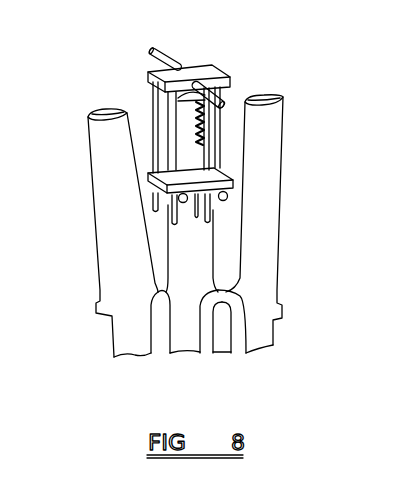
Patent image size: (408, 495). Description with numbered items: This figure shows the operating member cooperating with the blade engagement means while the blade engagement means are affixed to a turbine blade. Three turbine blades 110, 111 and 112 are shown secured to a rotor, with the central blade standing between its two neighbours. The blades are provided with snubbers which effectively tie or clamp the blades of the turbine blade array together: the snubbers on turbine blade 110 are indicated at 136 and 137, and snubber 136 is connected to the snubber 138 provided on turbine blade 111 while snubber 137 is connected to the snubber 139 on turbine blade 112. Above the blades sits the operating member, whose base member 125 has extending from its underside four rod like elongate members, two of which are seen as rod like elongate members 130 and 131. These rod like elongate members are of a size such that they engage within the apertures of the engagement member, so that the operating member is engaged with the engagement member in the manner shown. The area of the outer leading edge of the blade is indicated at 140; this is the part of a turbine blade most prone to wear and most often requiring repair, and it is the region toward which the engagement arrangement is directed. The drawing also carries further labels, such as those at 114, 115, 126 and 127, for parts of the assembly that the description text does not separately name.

The turbine blade 110 is at (186, 143).
The turbine blade 111 is at (109, 175).
The turbine blade 112 is at (278, 96).
The lower plate 114 is at (149, 180).
The bolt ends 115 is at (212, 236).
The base member 125 is at (216, 66).
The pin 126 is at (152, 49).
The rod 127 is at (228, 96).
The rod like elongate member 130 is at (208, 159).
The rod like elongate member 131 is at (177, 221).
The snubber 136 is at (163, 356).
The snubber 137 is at (201, 356).
The snubber 138 is at (160, 298).
The snubber 139 is at (244, 354).
The outer leading edge area 140 is at (210, 124).